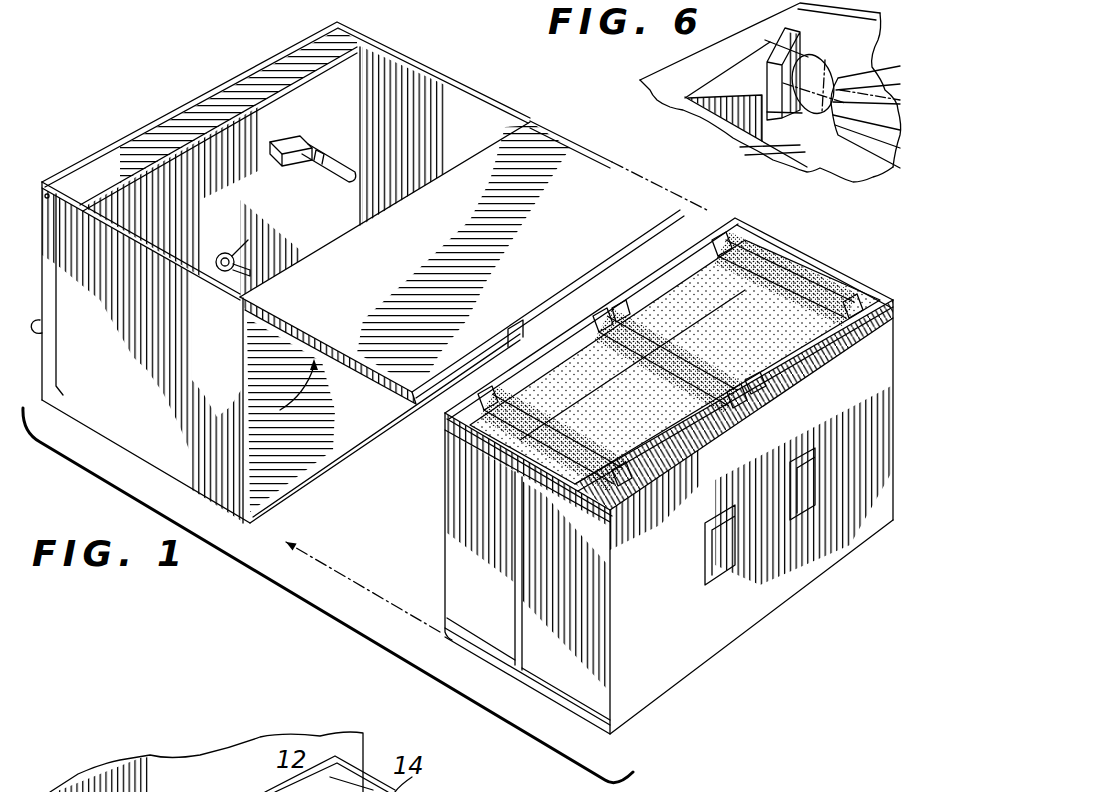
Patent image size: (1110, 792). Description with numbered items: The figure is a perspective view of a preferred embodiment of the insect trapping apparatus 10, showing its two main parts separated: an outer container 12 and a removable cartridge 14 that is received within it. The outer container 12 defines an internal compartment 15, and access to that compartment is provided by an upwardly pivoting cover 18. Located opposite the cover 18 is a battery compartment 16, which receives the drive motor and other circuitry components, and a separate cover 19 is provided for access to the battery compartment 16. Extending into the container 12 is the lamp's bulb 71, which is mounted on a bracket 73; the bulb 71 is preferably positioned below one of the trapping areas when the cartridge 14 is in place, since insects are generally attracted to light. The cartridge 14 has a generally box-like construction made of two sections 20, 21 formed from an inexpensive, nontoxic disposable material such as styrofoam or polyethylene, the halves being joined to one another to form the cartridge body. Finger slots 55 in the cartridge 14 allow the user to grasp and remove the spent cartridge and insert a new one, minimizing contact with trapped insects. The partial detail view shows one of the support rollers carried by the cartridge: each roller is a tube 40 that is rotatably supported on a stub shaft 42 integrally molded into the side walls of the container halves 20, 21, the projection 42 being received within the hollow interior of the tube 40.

In FIG. 1, the insect trapping apparatus 10 is at (116, 104).
In FIG. 1, the outer container 12 is at (365, 36).
In FIG. 1, the cartridge 14 is at (665, 478).
In FIG. 1, the internal compartment 15 is at (324, 229).
In FIG. 1, the battery compartment 16 is at (166, 130).
In FIG. 1, the cover 18 is at (618, 190).
In FIG. 1, the cover 19 is at (50, 334).
In FIG. 1, the section 20 is at (488, 642).
In FIG. 6, the section 20 is at (672, 80).
In FIG. 1, the section 21 is at (581, 690).
In FIG. 6, the tube 40 is at (847, 140).
In FIG. 6, the stub shaft 42 is at (768, 82).
In FIG. 1, the finger slots 55 is at (735, 565).
In FIG. 1, the bulb 71 is at (340, 168).
In FIG. 1, the bracket 73 is at (294, 160).